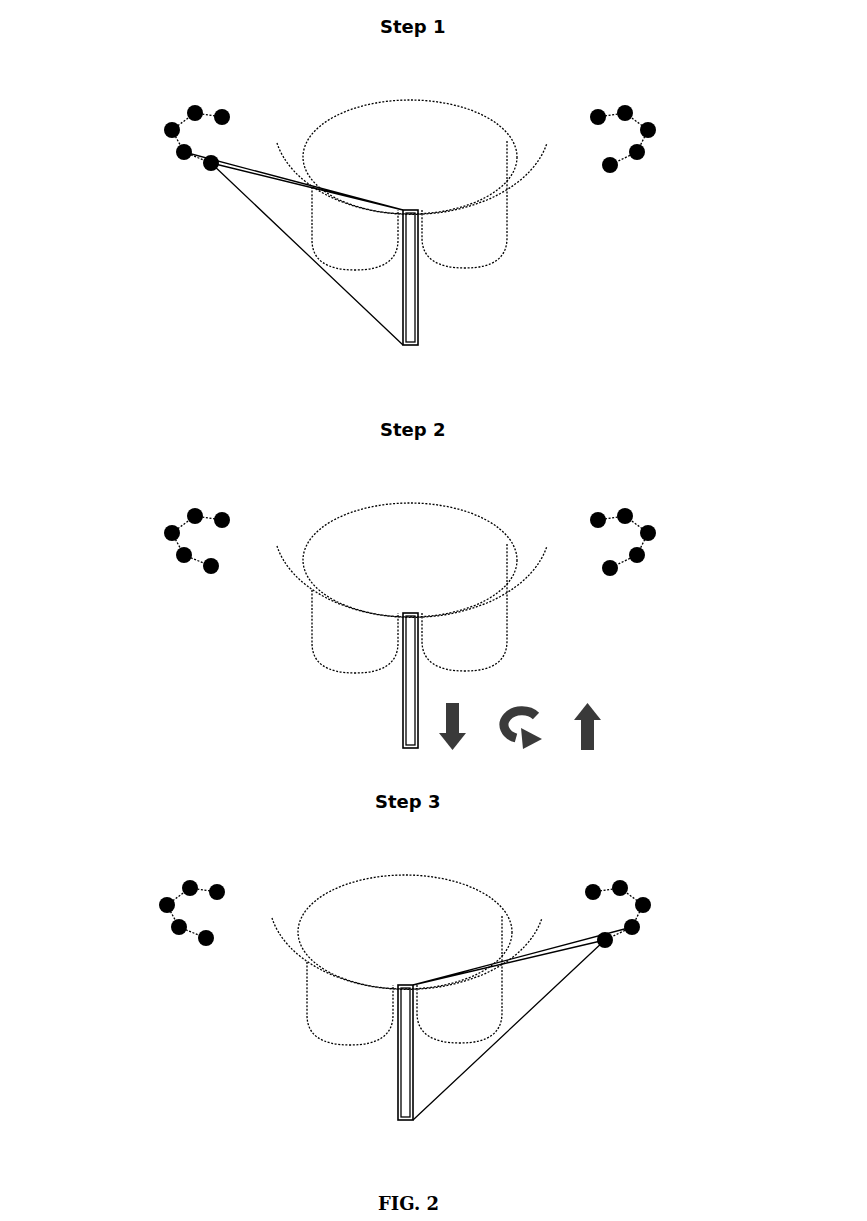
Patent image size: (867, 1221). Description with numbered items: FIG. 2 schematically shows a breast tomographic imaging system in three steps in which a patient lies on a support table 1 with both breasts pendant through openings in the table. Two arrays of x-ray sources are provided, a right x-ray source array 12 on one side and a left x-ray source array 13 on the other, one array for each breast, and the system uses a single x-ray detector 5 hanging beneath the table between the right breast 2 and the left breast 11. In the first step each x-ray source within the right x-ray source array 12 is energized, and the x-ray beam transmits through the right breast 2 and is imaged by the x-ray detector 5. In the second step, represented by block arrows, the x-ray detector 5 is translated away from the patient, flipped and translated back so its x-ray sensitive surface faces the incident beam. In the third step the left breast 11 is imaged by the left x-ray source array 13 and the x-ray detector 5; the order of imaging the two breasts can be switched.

The support table 1 is at (282, 136).
The right breast 2 is at (358, 225).
The x-ray detector 5 is at (401, 283).
The left breast 11 is at (463, 230).
The right x-ray source array 12 is at (163, 130).
The left x-ray source array 13 is at (657, 131).